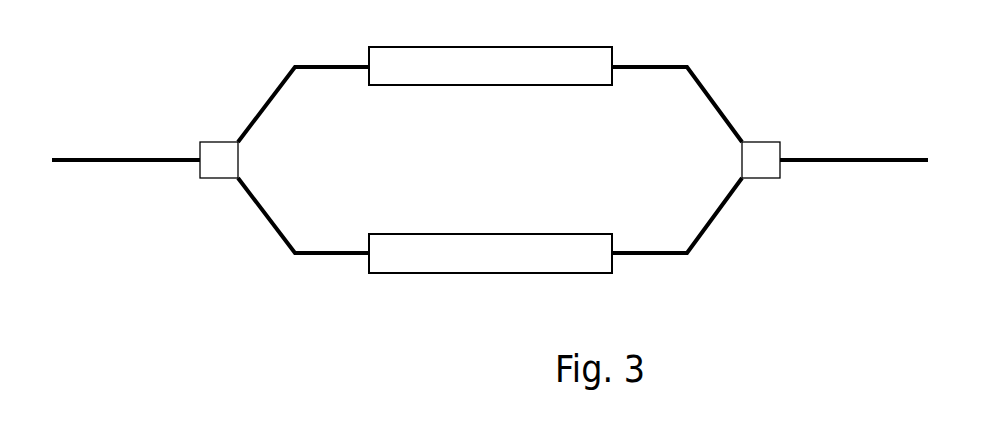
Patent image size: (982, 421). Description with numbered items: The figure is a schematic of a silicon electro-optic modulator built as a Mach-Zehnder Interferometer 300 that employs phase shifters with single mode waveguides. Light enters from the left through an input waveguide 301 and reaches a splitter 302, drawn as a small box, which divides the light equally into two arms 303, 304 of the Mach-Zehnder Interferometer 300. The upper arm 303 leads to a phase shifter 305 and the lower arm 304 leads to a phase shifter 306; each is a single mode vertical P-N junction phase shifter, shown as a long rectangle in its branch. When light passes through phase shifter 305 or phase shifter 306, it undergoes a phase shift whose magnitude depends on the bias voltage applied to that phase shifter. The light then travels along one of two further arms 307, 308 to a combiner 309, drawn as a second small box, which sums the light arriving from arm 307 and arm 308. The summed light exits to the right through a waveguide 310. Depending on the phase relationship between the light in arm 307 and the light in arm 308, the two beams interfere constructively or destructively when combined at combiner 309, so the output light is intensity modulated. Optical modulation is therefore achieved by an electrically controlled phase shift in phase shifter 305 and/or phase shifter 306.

The Mach-Zehnder Interferometer 300 is at (262, 256).
The input waveguide 301 is at (107, 158).
The splitter 302 is at (220, 160).
The arm 303 is at (260, 110).
The arm 304 is at (262, 215).
The phase shifter 305 is at (515, 81).
The phase shifter 306 is at (515, 267).
The arm 307 is at (705, 82).
The arm 308 is at (717, 217).
The combiner 309 is at (755, 157).
The waveguide 310 is at (870, 159).